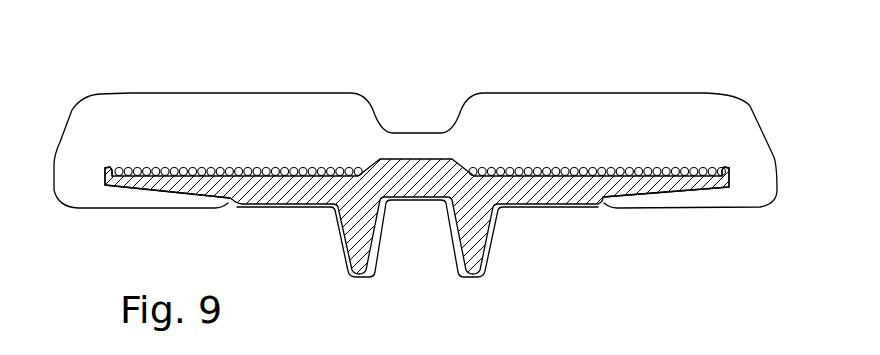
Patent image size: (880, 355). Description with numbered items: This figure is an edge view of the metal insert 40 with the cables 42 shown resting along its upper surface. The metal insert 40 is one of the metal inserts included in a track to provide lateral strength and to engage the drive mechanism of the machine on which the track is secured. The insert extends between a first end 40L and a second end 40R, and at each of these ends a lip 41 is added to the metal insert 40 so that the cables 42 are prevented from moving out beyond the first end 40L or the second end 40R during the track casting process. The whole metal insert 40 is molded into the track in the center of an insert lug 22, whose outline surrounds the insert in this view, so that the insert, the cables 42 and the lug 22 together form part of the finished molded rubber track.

The insert lug 22 is at (592, 100).
The metal insert 40 is at (352, 240).
The first end 40L is at (104, 193).
The second end 40R is at (729, 191).
The lip 41 is at (109, 168).
The cables 42 is at (262, 160).